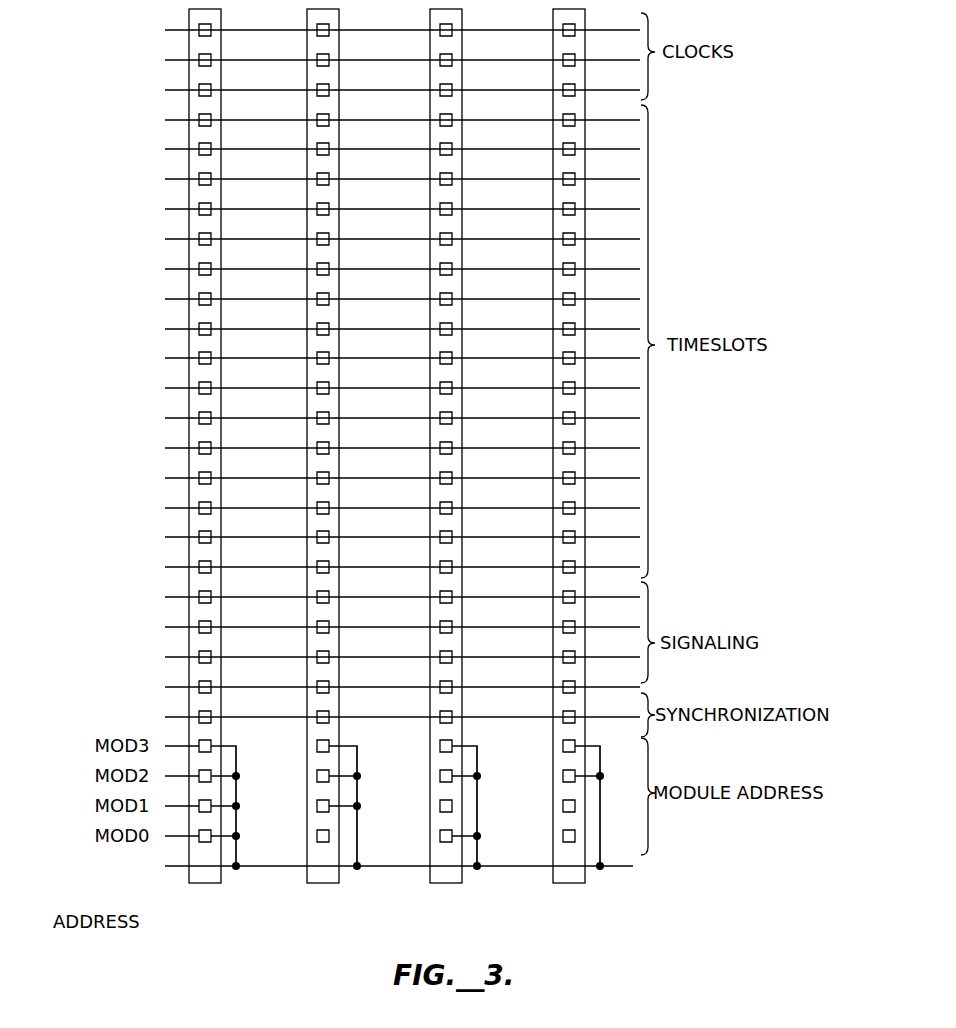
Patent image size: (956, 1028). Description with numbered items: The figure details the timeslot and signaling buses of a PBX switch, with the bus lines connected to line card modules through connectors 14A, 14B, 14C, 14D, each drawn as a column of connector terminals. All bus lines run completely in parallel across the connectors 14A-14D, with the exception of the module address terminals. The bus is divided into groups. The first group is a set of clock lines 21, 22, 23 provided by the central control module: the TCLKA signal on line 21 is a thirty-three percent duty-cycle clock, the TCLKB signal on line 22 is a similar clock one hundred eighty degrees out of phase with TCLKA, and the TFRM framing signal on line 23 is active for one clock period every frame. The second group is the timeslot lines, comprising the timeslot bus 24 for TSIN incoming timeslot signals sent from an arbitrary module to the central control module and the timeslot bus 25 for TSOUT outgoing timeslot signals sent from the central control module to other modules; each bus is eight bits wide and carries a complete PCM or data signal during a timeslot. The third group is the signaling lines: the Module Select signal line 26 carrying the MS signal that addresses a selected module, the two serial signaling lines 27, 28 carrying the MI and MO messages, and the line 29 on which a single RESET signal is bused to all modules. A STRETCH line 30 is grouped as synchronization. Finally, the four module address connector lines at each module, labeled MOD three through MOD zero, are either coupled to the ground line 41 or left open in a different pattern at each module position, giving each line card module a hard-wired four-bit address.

The connector 14A is at (215, 883).
The connector 14B is at (333, 883).
The connector 14C is at (458, 883).
The connector 14D is at (581, 883).
The clock line 21 is at (349, 30).
The clock line 22 is at (349, 60).
The clock line 23 is at (349, 90).
The timeslot bus 24 is at (590, 333).
The timeslot bus 25 is at (590, 570).
The module select signal line 26 is at (601, 594).
The signal line 27 is at (601, 624).
The signal line 28 is at (601, 654).
The reset line 29 is at (601, 684).
The STRETCH synchronization line 30 is at (601, 714).
The ground line 41 is at (633, 866).